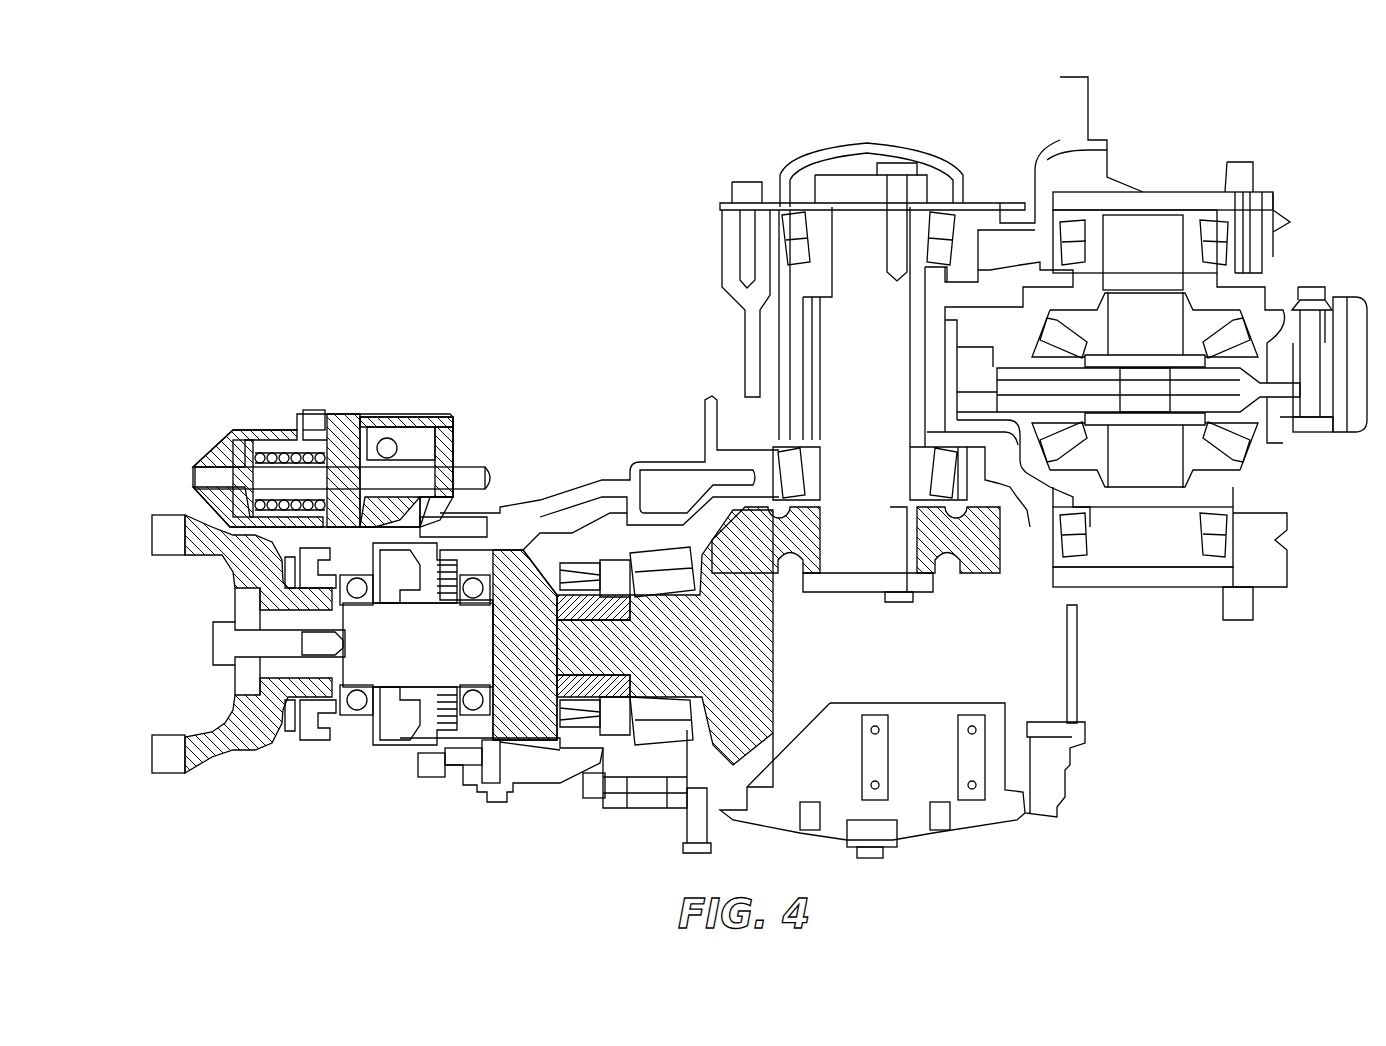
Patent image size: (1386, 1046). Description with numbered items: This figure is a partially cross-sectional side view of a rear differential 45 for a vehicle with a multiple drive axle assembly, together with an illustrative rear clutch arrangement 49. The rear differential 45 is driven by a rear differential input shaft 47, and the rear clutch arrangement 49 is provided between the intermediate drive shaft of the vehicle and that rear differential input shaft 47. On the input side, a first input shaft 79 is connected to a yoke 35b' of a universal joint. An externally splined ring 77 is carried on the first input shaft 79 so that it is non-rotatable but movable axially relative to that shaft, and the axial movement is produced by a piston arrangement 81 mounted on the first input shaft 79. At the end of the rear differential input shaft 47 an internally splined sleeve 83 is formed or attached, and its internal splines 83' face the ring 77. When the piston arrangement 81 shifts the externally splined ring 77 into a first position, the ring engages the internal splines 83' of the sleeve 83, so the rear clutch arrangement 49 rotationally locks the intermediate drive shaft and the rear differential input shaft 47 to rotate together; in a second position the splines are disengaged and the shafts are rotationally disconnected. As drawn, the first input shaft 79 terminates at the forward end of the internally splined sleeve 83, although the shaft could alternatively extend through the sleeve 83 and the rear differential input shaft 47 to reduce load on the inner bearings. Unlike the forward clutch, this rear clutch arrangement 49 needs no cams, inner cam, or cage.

The yoke 35b' is at (206, 644).
The rear clutch arrangement 49 is at (293, 388).
The piston arrangement 81 is at (290, 432).
The internally splined sleeve 83 is at (599, 568).
The internal splines 83' is at (418, 644).
The first input shaft 79 is at (355, 670).
The externally splined ring 77 is at (413, 710).
The rear differential input shaft 47 is at (755, 650).
The rear differential 45 is at (940, 598).